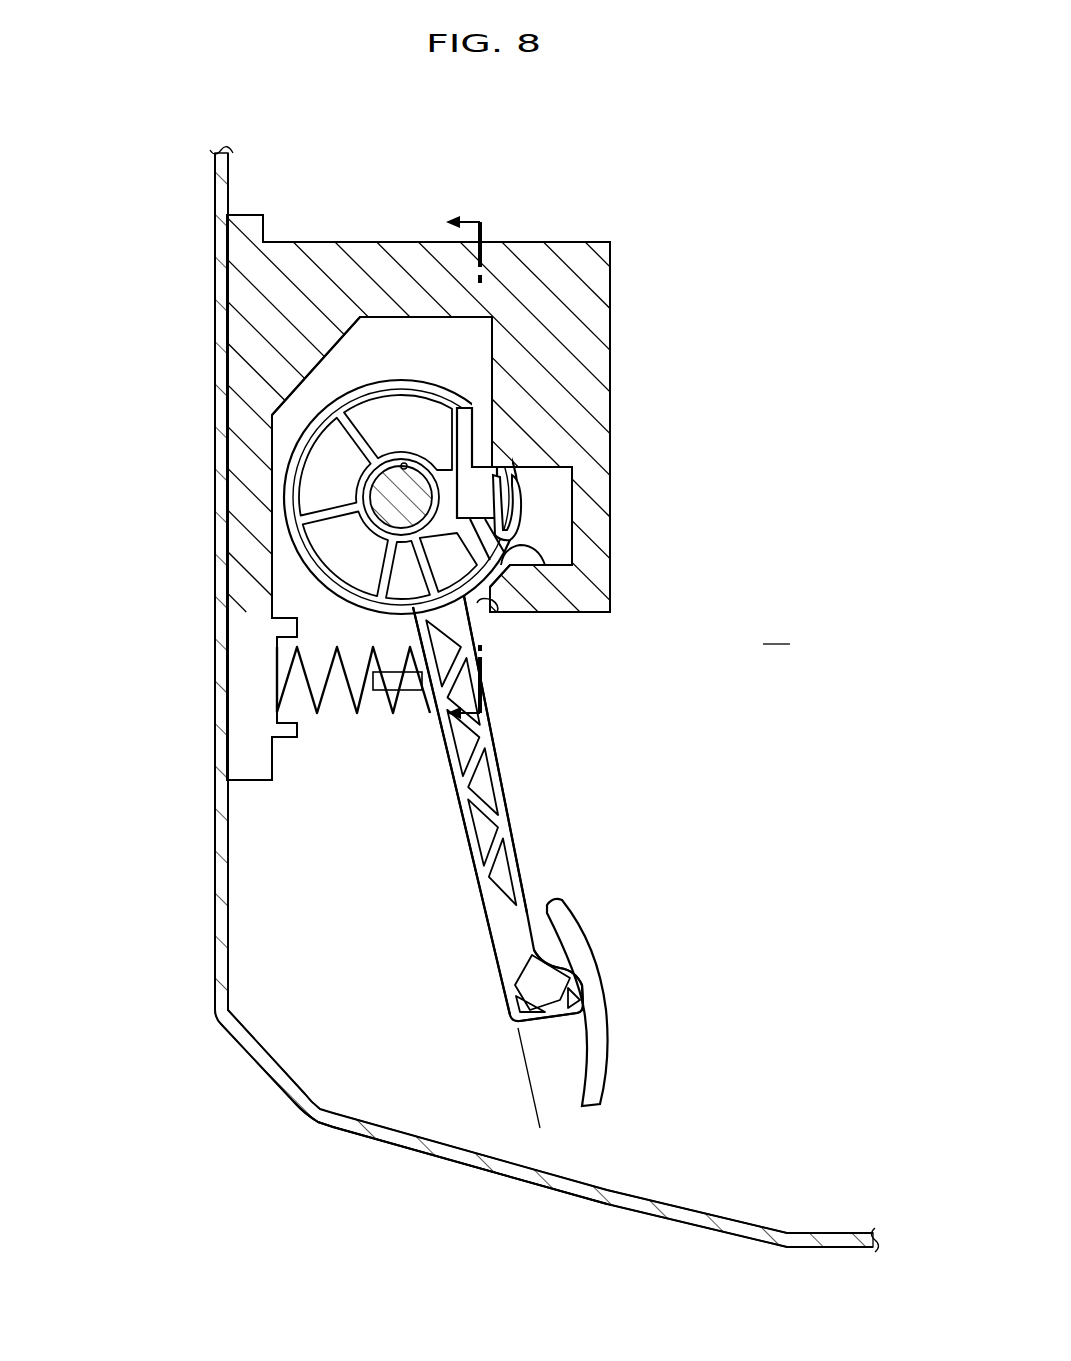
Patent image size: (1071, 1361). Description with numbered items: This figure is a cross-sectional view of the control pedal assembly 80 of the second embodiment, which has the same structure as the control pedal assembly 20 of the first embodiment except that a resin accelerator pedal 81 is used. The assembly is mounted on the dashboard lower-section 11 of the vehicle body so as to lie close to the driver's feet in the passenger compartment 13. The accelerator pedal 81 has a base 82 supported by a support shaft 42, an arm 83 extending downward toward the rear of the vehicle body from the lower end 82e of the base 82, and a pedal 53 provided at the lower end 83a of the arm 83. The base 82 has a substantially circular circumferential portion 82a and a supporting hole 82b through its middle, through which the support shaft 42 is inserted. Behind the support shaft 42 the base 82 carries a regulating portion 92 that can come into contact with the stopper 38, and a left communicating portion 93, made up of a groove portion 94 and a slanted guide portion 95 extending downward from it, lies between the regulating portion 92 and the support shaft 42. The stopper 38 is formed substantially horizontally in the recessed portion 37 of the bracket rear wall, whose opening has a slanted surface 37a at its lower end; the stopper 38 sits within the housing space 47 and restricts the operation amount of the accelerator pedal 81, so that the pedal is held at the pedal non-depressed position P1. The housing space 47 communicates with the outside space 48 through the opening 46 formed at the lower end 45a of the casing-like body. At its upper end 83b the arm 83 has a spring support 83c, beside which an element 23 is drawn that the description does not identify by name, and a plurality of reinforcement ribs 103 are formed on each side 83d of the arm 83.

The dashboard lower-section 11 is at (214, 325).
The passenger compartment 13 is at (776, 629).
The control pedal assembly 20 is at (510, 238).
The coil spring 23 is at (337, 697).
The recessed portion 37 is at (565, 460).
The slanted surface 37a is at (542, 592).
The stopper 38 is at (480, 468).
The support shaft 42 is at (388, 483).
The lower end 45a is at (521, 610).
The opening 46 is at (477, 610).
The housing space 47 is at (383, 340).
The outside space 48 is at (347, 1068).
The pedal 53 is at (598, 1042).
The control pedal assembly 80 is at (641, 181).
The accelerator pedal 81 is at (515, 771).
The base 82 is at (285, 460).
The circumferential portion 82a is at (285, 525).
The supporting hole 82b is at (404, 462).
The lower end 82e is at (398, 600).
The arm 83 is at (507, 838).
The lower end 83a is at (560, 1022).
The upper end 83b is at (443, 708).
The spring support 83c is at (393, 683).
The side 83d is at (480, 838).
The regulating portion 92 is at (521, 467).
The left communicating portion 93 is at (720, 595).
The groove portion 94 is at (490, 490).
The slanted guide portion 95 is at (525, 547).
The reinforcement ribs 103 is at (497, 876).
The pedal non-depressed position P1 is at (539, 1093).